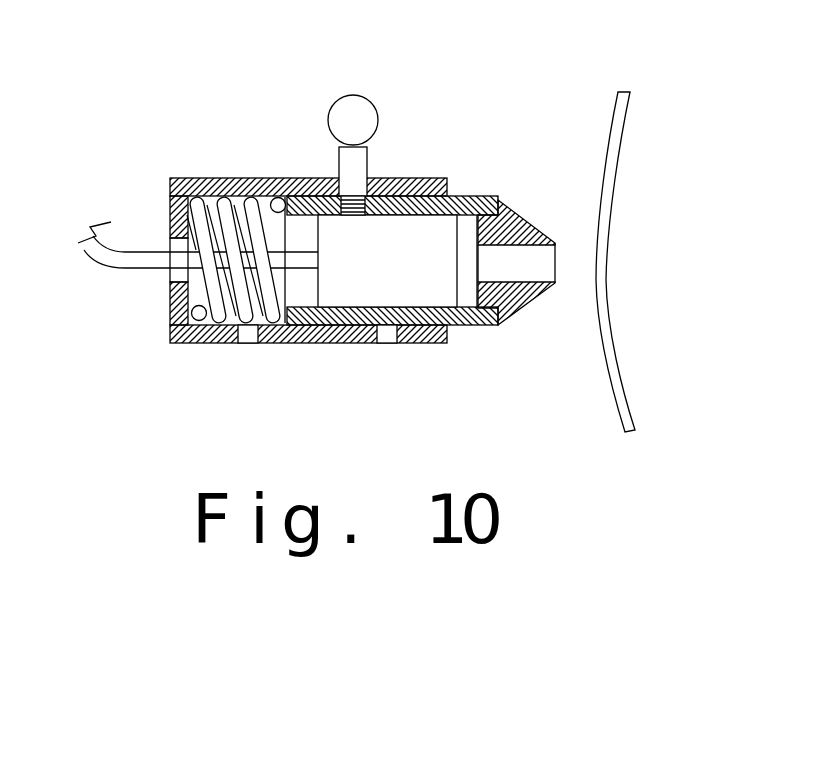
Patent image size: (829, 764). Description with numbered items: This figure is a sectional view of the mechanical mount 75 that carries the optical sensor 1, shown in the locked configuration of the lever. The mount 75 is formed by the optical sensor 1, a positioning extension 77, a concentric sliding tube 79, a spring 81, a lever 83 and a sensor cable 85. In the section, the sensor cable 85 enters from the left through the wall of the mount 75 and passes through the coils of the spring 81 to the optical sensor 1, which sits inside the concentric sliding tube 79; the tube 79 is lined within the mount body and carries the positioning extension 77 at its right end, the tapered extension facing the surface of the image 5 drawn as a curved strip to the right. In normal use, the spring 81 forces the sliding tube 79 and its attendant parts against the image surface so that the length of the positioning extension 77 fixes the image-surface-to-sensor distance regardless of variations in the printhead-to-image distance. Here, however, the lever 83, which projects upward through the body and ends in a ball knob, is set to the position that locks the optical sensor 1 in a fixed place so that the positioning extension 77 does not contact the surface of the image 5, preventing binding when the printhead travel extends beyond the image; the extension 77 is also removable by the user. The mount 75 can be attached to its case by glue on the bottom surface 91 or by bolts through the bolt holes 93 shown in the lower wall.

The optical sensor 1 is at (397, 267).
The image 5 is at (618, 92).
The mechanical mount 75 is at (170, 178).
The positioning extension 77 is at (527, 215).
The concentric sliding tube 79 is at (472, 198).
The spring 81 is at (217, 287).
The lever 83 is at (330, 112).
The sensor cable 85 is at (103, 263).
The bottom surface 91 is at (203, 343).
The bolt holes 93 is at (387, 338).